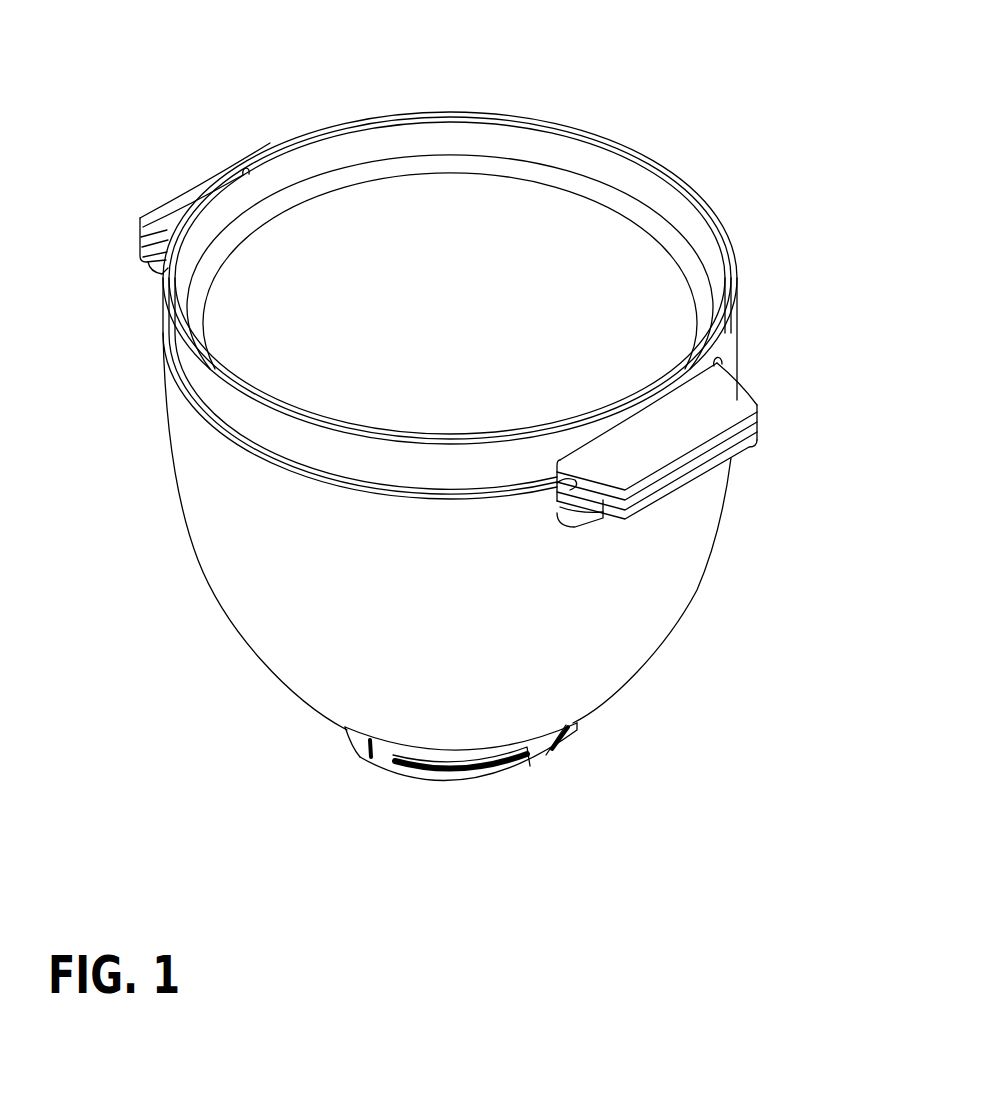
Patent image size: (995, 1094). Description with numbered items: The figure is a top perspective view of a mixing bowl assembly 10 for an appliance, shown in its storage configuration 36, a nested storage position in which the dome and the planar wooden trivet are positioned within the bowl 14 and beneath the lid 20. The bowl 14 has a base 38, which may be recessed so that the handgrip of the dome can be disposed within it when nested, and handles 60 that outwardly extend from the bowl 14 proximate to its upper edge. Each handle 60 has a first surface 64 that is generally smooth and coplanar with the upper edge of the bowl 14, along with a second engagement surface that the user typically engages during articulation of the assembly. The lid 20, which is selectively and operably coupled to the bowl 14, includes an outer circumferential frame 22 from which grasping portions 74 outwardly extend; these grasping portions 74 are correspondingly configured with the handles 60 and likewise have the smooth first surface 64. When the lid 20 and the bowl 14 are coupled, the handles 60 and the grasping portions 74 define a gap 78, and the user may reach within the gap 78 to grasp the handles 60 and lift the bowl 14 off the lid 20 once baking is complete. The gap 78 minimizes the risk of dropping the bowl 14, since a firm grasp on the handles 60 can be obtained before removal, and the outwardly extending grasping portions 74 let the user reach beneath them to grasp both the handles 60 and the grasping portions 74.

The mixing bowl assembly 10 is at (140, 53).
The bowl 14 is at (262, 550).
The lid 20 is at (393, 230).
The outer circumferential frame 22 is at (547, 143).
The storage configuration 36 is at (742, 133).
The base 38 is at (388, 752).
The handles 60 is at (147, 253).
The first surface 64 is at (197, 177).
The grasping portions 74 is at (217, 162).
The gap 78 is at (143, 247).